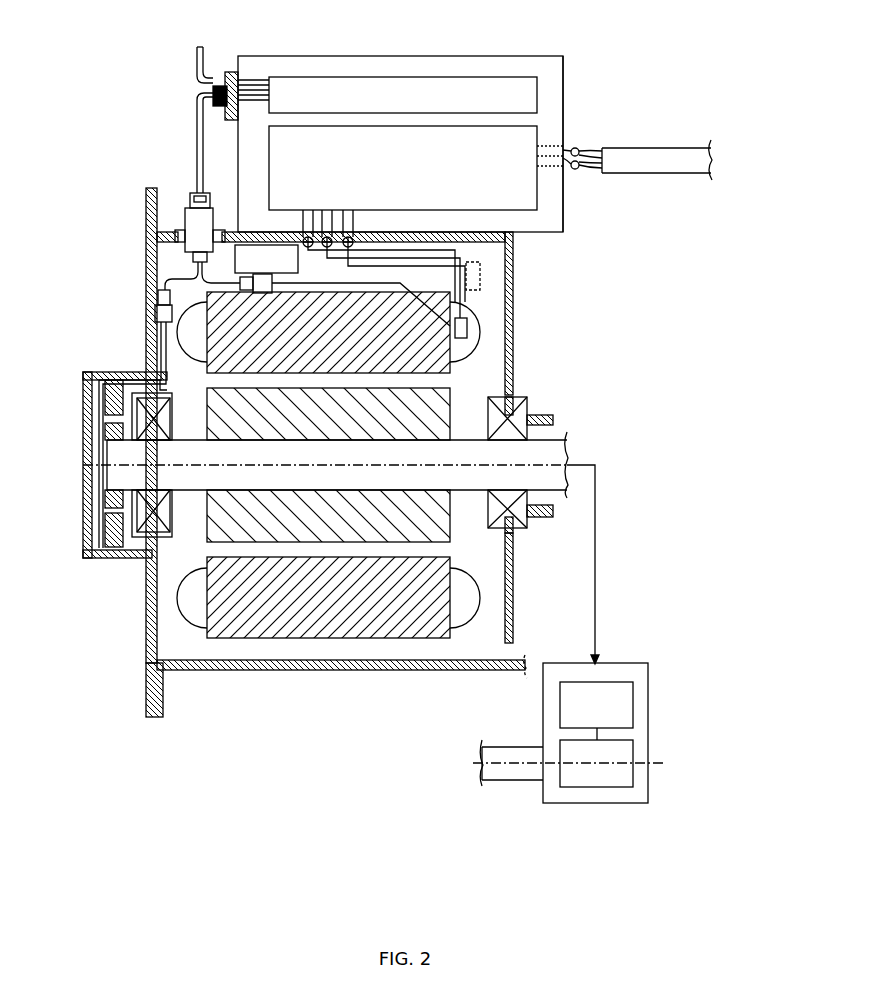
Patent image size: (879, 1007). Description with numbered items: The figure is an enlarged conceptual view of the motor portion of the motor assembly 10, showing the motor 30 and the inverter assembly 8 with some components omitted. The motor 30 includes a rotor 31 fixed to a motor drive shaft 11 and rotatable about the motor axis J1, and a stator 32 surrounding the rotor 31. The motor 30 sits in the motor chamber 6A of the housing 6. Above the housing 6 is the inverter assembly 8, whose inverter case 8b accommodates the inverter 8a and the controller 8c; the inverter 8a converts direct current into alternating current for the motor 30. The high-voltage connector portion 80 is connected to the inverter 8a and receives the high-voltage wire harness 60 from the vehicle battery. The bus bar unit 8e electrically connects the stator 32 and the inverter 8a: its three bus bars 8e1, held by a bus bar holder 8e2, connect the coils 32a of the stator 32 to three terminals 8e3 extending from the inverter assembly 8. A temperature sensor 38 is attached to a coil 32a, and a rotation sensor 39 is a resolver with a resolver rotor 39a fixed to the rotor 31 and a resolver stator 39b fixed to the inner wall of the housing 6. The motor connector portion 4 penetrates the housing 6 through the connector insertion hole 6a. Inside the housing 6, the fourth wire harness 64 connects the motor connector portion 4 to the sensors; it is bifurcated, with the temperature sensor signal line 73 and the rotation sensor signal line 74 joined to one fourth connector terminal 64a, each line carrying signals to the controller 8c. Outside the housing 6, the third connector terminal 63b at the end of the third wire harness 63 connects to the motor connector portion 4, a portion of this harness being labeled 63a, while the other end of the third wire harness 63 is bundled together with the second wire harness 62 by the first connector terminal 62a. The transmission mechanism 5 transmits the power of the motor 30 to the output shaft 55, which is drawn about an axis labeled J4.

The motor assembly 10 is at (664, 80).
The inverter assembly 8 is at (426, 124).
The inverter 8a is at (537, 200).
The inverter case 8b is at (548, 56).
The controller 8c is at (452, 77).
The bus bar unit 8e is at (460, 270).
The bus bar 8e1 is at (470, 262).
The bus bar holder 8e2 is at (478, 290).
The terminal 8e3 is at (308, 234).
The high-voltage connector portion 80 is at (582, 147).
The high-voltage wire harness 60 is at (655, 174).
The second wire harness 62 is at (192, 72).
The first connector terminal 62a is at (216, 76).
The third wire harness 63 is at (190, 104).
The second pipe vertical portion 63a is at (197, 135).
The third connector terminal 63b is at (196, 198).
The motor connector portion 4 is at (180, 203).
The housing 6 is at (362, 670).
The connector insertion hole 6a is at (176, 236).
The motor chamber 6A is at (208, 642).
The fourth wire harness 64 is at (160, 352).
The fourth connector terminal 64a is at (198, 258).
The rotation sensor signal line 74 is at (172, 276).
The temperature sensor signal line 73 is at (472, 350).
The temperature sensor 38 is at (468, 328).
The rotation sensor 39 is at (98, 446).
The resolver rotor 39a is at (105, 432).
The resolver stator 39b is at (105, 400).
The motor axis J1 is at (83, 466).
The rotor 31 is at (205, 542).
The stator 32 is at (281, 499).
The coil 32a is at (178, 605).
The motor 30 is at (196, 637).
The motor drive shaft 11 is at (560, 492).
The transmission mechanism 5 is at (641, 663).
The output shaft 55 is at (520, 782).
The fourth joint J4 is at (482, 770).